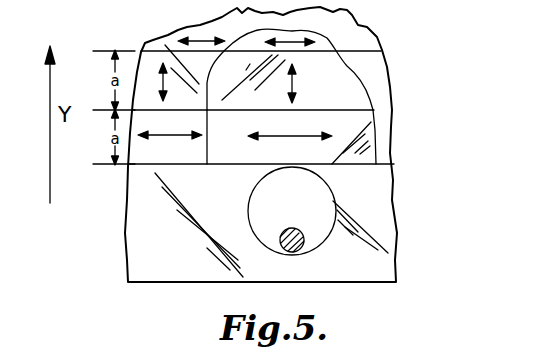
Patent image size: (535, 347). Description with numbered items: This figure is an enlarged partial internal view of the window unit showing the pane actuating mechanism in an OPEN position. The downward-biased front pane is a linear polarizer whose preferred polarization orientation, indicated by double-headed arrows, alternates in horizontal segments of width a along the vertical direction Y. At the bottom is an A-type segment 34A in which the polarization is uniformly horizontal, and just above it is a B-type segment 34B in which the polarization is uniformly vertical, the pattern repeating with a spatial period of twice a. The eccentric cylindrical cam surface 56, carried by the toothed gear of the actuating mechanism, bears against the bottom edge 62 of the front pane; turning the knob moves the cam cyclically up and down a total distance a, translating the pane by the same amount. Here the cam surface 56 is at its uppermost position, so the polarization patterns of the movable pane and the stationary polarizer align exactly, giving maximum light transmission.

The A-type segment 34A is at (378, 125).
The B-type segment 34B is at (337, 98).
The eccentric cylindrical cam surface 56 is at (305, 230).
The bottom edge 62 is at (208, 164).